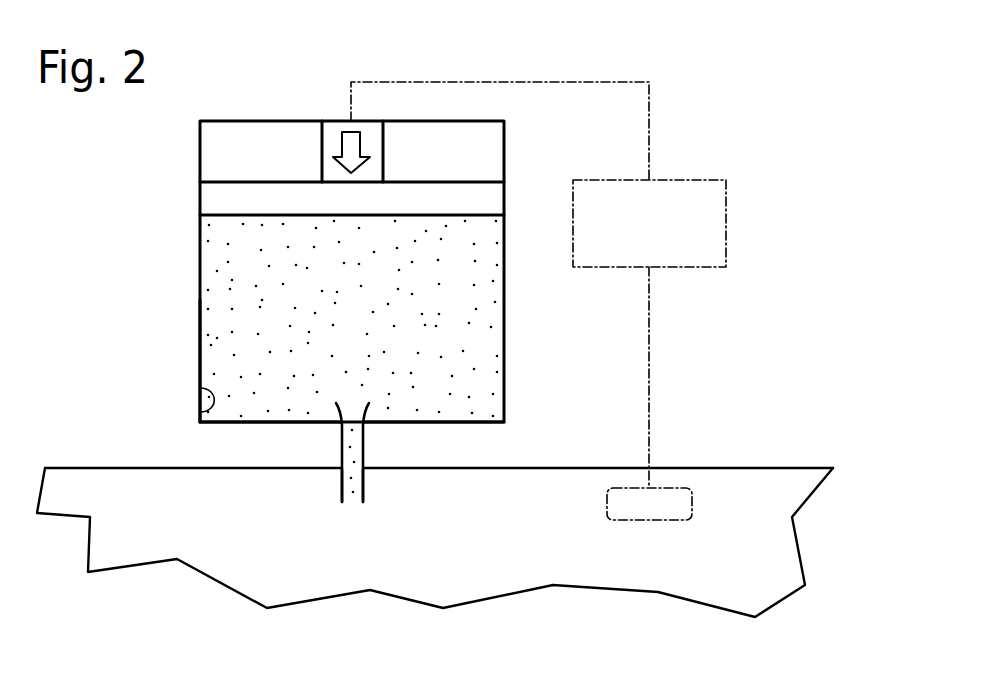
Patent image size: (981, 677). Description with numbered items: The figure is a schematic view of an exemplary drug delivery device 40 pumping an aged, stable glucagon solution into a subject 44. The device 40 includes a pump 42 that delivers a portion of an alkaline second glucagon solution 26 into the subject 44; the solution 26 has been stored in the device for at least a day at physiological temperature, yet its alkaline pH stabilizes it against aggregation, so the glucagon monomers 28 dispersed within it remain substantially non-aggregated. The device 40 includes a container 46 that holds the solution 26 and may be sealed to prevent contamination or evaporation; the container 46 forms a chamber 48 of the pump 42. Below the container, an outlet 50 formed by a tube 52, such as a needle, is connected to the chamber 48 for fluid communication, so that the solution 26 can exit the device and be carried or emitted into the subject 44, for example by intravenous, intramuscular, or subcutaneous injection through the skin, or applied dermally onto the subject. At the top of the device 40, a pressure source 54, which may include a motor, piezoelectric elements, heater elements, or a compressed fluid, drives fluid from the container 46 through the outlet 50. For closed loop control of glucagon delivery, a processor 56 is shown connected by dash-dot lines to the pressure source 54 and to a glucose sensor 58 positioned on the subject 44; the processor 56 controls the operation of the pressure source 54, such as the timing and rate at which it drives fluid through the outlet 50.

The drug delivery device 40 is at (108, 188).
The pump 42 is at (193, 193).
The pressure source 54 is at (320, 160).
The second glucagon solution 26 is at (215, 258).
The glucagon monomers 28 is at (216, 337).
The container 46 is at (199, 376).
The chamber 48 is at (200, 412).
The tube 52 is at (364, 437).
The outlet 50 is at (343, 481).
The processor 56 is at (727, 188).
The glucose sensor 58 is at (693, 500).
The subject 44 is at (100, 467).